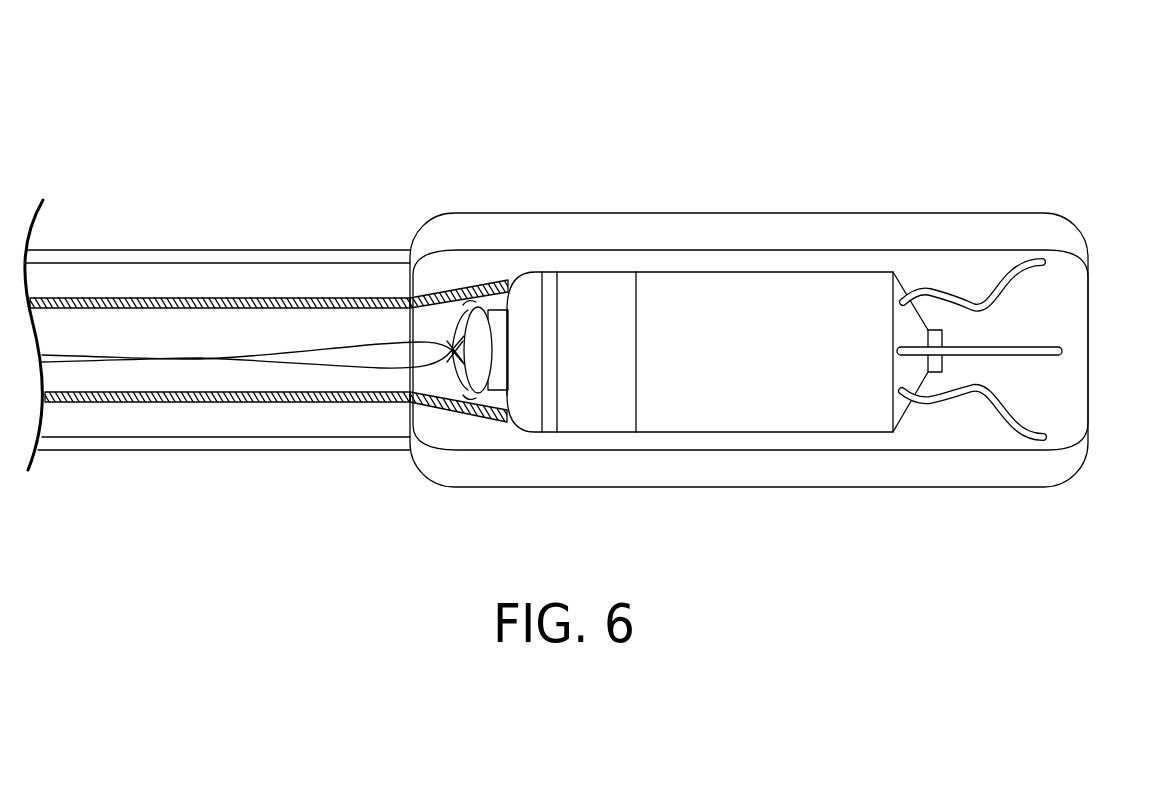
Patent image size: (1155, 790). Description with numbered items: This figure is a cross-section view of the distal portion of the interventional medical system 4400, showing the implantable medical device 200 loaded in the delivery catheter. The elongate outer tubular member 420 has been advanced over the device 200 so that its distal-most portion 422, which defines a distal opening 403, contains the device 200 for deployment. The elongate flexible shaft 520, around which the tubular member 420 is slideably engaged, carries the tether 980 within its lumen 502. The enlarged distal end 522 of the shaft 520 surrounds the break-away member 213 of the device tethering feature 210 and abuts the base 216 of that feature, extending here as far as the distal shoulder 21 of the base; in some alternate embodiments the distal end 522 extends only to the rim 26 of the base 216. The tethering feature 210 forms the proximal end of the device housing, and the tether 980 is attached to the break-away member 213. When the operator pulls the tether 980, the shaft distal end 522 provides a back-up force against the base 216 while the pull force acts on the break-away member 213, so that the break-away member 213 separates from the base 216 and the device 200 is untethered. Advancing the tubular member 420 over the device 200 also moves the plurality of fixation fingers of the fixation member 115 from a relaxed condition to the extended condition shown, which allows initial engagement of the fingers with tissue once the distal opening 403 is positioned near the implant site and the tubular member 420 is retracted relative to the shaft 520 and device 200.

The interventional medical system 4400 is at (504, 100).
The elongate outer tubular member 420 is at (286, 196).
The elongate flexible shaft 520 is at (180, 276).
The lumen 502 is at (202, 387).
The tether 980 is at (338, 400).
The distal end 522 is at (442, 293).
The distal-most portion 422 is at (902, 235).
The distal opening 403 is at (1073, 385).
The rim 26 is at (453, 420).
The break-away member 213 is at (436, 391).
The implantable medical device 200 is at (768, 290).
The distal shoulder 21 is at (511, 281).
The tethering feature 210 is at (504, 418).
The base 216 is at (543, 406).
The fixation member 115 is at (1001, 258).